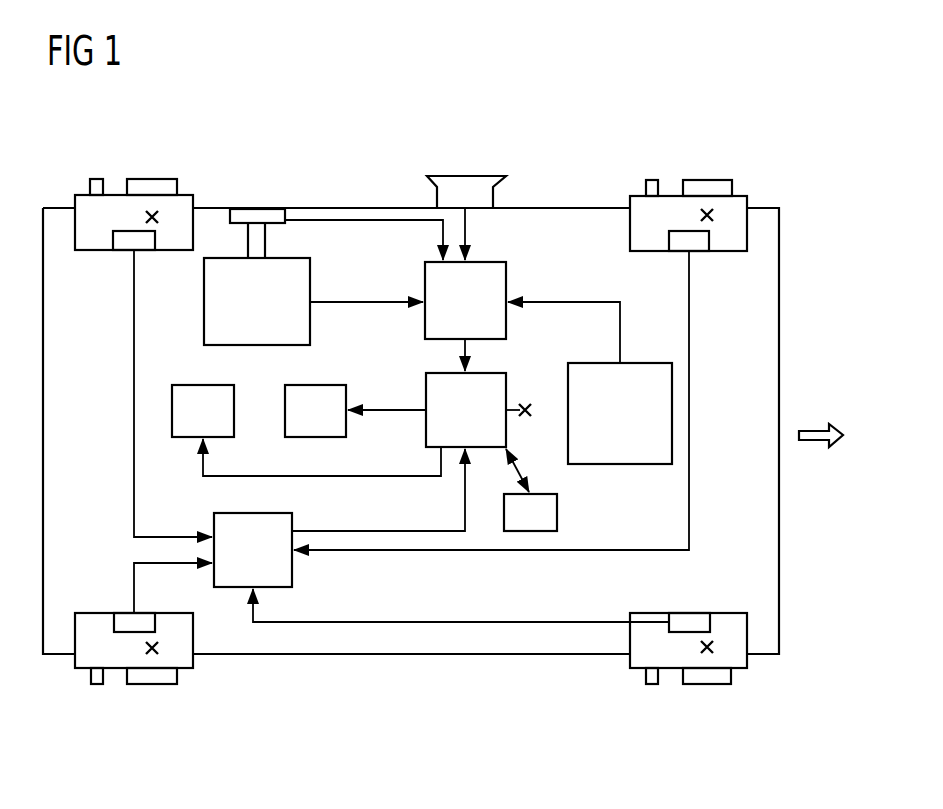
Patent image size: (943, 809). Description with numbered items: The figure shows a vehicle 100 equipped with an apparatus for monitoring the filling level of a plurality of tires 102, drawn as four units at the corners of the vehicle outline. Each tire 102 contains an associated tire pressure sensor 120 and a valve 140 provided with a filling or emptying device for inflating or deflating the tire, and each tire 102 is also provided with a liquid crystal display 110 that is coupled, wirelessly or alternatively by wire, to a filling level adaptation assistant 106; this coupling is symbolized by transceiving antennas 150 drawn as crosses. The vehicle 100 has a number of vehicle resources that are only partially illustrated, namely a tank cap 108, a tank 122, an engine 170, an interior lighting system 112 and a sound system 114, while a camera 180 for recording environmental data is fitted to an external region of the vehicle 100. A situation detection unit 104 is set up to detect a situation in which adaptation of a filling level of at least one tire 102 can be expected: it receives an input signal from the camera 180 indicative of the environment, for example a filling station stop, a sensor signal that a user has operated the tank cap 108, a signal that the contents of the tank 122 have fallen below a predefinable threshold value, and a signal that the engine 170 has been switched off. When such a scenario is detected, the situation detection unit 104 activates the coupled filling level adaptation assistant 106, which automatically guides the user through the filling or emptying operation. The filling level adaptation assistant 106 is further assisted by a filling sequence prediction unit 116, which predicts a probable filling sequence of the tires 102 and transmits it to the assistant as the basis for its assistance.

The vehicle 100 is at (772, 134).
The tire 102 is at (166, 251).
The situation detection unit 104 is at (506, 282).
The filling level adaptation assistant 106 is at (426, 436).
The tank cap 108 is at (262, 209).
The liquid crystal display 110 is at (152, 185).
The interior lighting system 112 is at (333, 385).
The sound system 114 is at (188, 385).
The filling sequence prediction unit 116 is at (557, 512).
The tire pressure sensor 120 is at (125, 242).
The tank 122 is at (310, 280).
The valve 140 is at (97, 178).
The transceiving antenna 150 is at (157, 214).
The engine 170 is at (642, 466).
The camera 180 is at (463, 187).